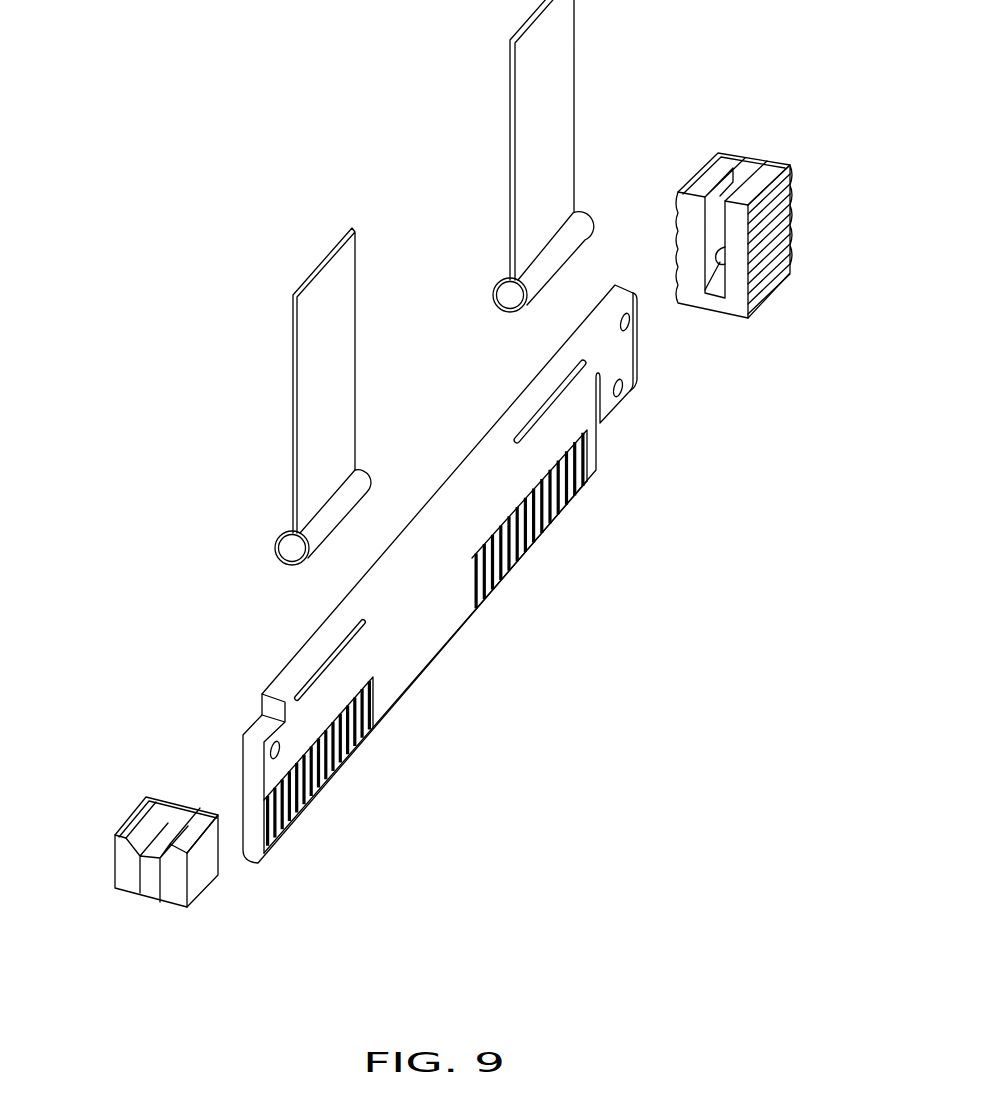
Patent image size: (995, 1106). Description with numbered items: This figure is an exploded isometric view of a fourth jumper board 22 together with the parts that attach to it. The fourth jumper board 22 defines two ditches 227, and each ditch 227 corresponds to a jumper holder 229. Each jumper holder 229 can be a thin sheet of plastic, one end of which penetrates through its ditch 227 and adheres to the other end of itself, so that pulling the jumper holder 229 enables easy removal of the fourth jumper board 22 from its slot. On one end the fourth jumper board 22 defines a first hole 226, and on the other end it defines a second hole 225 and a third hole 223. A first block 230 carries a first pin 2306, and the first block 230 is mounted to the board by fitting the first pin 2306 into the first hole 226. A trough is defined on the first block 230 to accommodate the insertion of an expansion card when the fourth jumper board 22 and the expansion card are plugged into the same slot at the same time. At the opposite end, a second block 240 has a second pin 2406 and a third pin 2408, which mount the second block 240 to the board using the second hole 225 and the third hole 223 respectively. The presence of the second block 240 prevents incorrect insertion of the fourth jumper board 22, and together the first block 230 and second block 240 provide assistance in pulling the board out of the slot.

The fourth jumper board 22 is at (397, 637).
The third hole 223 is at (630, 393).
The second hole 225 is at (638, 296).
The first hole 226 is at (282, 755).
The ditch 227 is at (303, 682).
The jumper holder 229 is at (535, 163).
The first block 230 is at (211, 905).
The first pin 2306 is at (136, 839).
The second block 240 is at (748, 347).
The second pin 2406 is at (723, 182).
The third pin 2408 is at (722, 253).